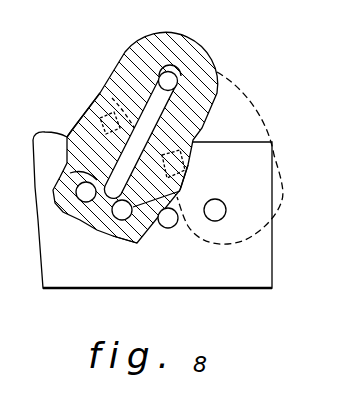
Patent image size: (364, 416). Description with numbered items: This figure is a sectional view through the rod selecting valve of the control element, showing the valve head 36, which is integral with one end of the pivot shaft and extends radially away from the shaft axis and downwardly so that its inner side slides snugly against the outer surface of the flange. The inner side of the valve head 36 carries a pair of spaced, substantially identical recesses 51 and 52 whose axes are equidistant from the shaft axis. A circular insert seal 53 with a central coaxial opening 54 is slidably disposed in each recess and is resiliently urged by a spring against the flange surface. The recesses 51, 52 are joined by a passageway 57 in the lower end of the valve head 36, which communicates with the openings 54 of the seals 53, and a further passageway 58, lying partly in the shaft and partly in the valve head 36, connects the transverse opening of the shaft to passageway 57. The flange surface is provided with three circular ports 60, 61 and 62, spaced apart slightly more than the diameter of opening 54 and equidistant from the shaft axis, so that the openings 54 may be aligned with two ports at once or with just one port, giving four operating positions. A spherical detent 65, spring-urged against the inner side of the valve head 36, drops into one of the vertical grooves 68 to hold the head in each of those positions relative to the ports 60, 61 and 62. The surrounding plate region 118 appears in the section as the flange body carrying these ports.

The valve head 36 is at (202, 55).
The recess 51 is at (53, 190).
The recess 52 is at (138, 225).
The circular insert seal 53 is at (64, 179).
The central coaxial opening 54 is at (67, 135).
The passageway 57 is at (103, 205).
The passageway 58 is at (160, 100).
The circular port 60 is at (119, 214).
The circular port 61 is at (168, 229).
The circular port 62 is at (216, 219).
The spherical detent 65 is at (193, 163).
The vertical grooves 68 is at (203, 133).
The plate 118 is at (136, 210).